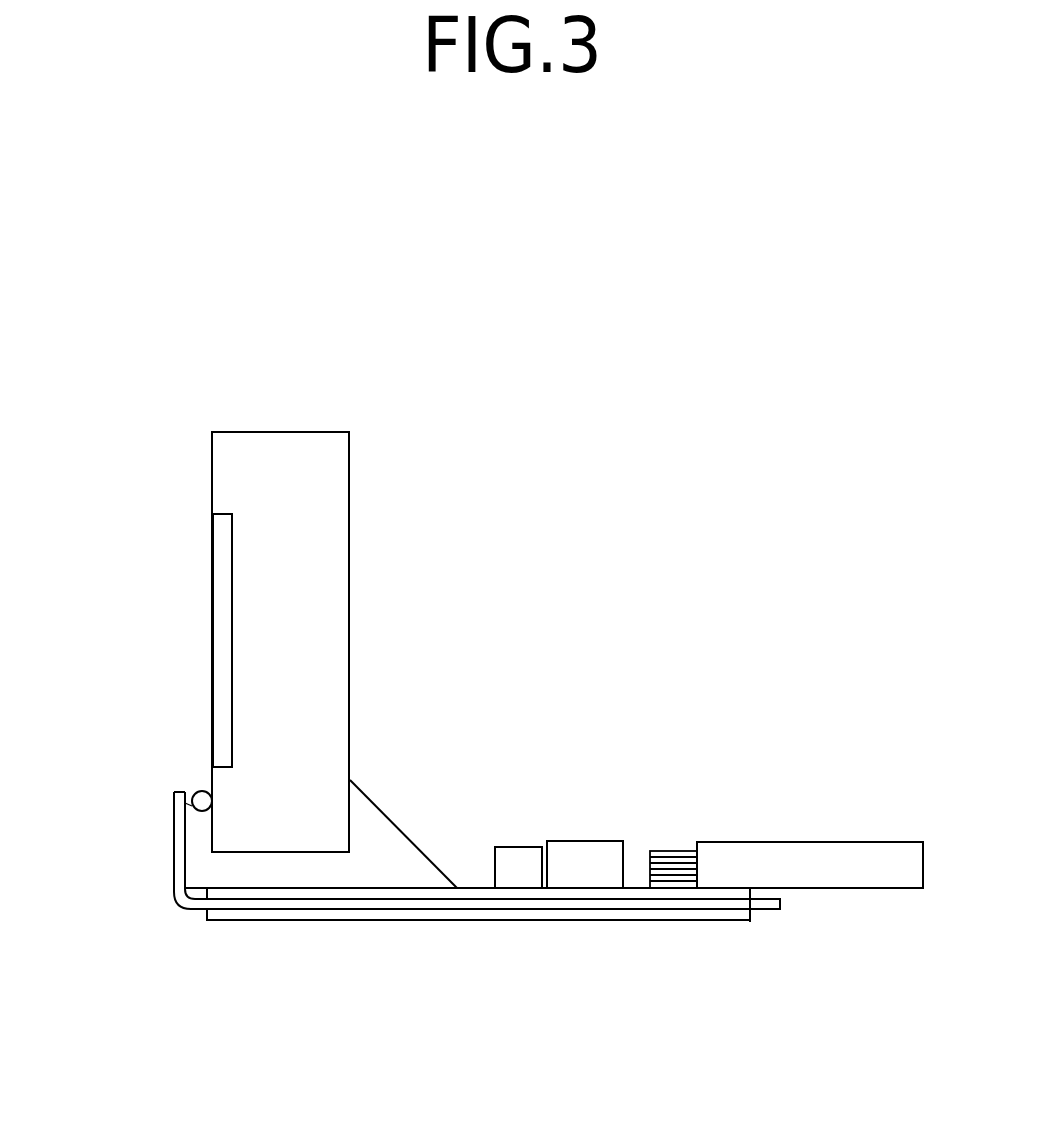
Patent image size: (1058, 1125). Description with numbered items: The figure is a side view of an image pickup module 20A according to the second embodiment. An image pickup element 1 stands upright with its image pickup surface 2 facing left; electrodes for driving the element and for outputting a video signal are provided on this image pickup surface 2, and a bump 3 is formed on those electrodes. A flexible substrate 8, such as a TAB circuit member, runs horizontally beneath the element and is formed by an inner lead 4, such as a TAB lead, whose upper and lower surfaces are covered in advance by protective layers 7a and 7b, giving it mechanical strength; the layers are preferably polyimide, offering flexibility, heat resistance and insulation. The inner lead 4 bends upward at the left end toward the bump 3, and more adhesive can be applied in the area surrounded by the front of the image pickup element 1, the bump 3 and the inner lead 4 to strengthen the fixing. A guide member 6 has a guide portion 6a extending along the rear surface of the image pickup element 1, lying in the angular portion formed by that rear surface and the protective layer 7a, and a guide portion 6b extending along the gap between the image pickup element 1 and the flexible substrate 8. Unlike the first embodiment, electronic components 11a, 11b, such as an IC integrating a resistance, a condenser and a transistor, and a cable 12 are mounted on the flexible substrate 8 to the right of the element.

The image pickup module 20A is at (623, 393).
The image pickup element 1 is at (230, 461).
The image pickup surface 2 is at (213, 572).
The bump 3 is at (200, 790).
The inner lead 4 is at (175, 858).
The guide member 6 is at (478, 962).
The guide portion 6a is at (382, 848).
The guide portion 6b is at (268, 870).
The protective layer 7a is at (462, 887).
The protective layer 7b is at (657, 922).
The flexible substrate 8 is at (793, 892).
The electronic component 11a is at (516, 877).
The electronic component 11b is at (607, 877).
The cable 12 is at (768, 842).